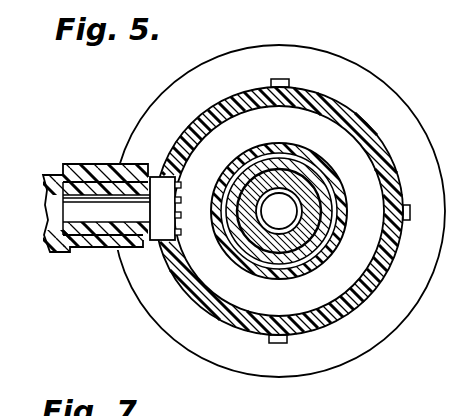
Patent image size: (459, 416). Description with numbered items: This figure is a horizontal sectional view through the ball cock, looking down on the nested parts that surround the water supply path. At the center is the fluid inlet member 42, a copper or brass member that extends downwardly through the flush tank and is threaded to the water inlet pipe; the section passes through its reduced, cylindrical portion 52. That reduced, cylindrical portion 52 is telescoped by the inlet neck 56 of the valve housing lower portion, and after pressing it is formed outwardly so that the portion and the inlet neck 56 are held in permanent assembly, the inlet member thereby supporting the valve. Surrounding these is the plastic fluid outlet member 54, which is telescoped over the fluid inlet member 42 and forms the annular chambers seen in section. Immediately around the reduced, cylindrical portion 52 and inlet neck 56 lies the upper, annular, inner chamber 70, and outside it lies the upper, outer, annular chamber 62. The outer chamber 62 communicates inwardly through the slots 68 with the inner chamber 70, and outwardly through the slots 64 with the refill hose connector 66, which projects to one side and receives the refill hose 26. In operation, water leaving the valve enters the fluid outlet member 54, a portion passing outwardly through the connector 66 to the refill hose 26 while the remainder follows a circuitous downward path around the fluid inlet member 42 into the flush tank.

The refill hose 26 is at (58, 178).
The fluid inlet member 42 is at (298, 223).
The reduced, cylindrical portion 52 is at (289, 232).
The fluid outlet member 54 is at (200, 120).
The inlet neck 56 is at (273, 251).
The upper, outer, annular chamber 62 is at (182, 275).
The slots 64 is at (181, 187).
The refill hose connector 66 is at (82, 249).
The slots 68 is at (231, 246).
The upper, annular, inner chamber 70 is at (213, 213).